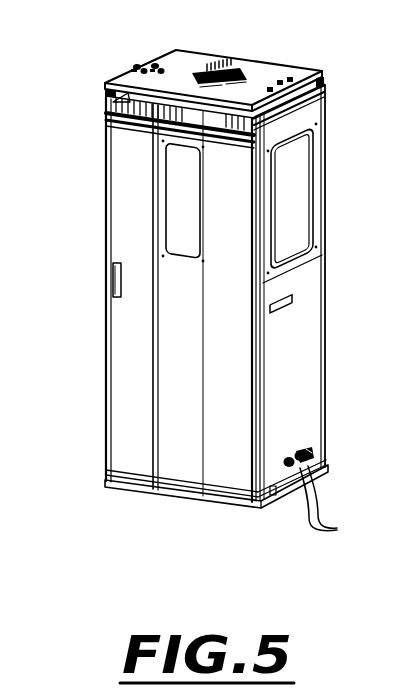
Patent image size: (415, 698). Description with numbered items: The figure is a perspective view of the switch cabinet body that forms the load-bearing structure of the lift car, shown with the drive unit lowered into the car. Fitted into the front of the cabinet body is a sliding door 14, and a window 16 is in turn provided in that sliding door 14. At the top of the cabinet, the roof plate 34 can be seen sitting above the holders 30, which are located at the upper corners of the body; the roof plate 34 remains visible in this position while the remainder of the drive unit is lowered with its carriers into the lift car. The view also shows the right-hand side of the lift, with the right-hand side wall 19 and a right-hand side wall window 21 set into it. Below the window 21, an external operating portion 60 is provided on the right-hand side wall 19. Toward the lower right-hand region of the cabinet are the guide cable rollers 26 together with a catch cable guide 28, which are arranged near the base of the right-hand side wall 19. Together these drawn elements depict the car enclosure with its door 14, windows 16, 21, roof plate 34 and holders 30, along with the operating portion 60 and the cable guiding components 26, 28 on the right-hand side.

The sliding door 14 is at (185, 345).
The window 16 is at (178, 216).
The right-hand side wall 19 is at (298, 376).
The right-hand side wall window 21 is at (290, 190).
The guide cable rollers 26 is at (331, 505).
The catch cable guide 28 is at (314, 452).
The holders 30 is at (112, 93).
The roof plate 34 is at (268, 76).
The external operating portion 60 is at (290, 308).